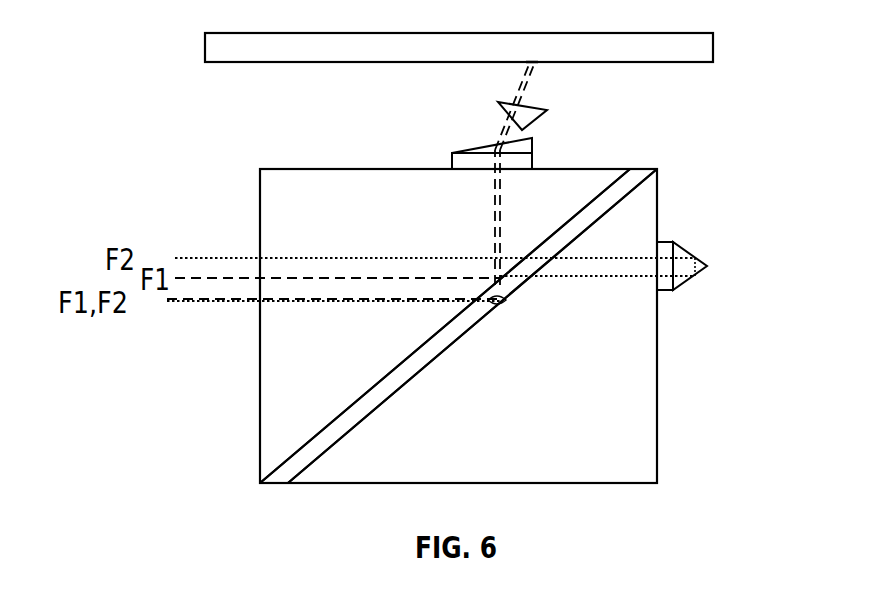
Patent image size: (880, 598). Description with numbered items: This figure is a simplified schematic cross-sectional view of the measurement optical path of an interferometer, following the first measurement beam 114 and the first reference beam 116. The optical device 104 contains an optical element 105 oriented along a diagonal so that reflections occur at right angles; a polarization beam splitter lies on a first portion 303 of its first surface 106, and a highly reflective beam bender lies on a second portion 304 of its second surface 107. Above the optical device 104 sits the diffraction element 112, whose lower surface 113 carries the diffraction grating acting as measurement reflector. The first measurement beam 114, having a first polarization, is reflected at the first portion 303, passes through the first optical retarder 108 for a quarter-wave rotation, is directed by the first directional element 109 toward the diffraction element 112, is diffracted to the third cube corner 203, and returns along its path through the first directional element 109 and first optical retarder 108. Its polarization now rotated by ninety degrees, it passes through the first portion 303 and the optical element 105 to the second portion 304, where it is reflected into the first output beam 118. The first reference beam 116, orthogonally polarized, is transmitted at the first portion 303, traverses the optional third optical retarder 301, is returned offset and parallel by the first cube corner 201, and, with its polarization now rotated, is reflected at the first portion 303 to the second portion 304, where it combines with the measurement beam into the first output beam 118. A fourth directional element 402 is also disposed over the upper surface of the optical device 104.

The optical device 104 is at (643, 440).
The optical element 105 is at (275, 485).
The first surface 106 is at (337, 413).
The second surface 107 is at (358, 425).
The first optical retarder 108 is at (532, 163).
The first directional element 109 is at (532, 140).
The diffraction element 112 is at (701, 33).
The lower surface 113 is at (701, 62).
The first measurement beam 114 is at (362, 277).
The first reference beam 116 is at (310, 257).
The first output beam 118 is at (320, 300).
The first cube corner 201 is at (690, 252).
The third cube corner 203 is at (547, 111).
The third optical retarder 301 is at (662, 290).
The first portion 303 is at (492, 276).
The second portion 304 is at (503, 302).
The fourth directional element 402 is at (533, 62).